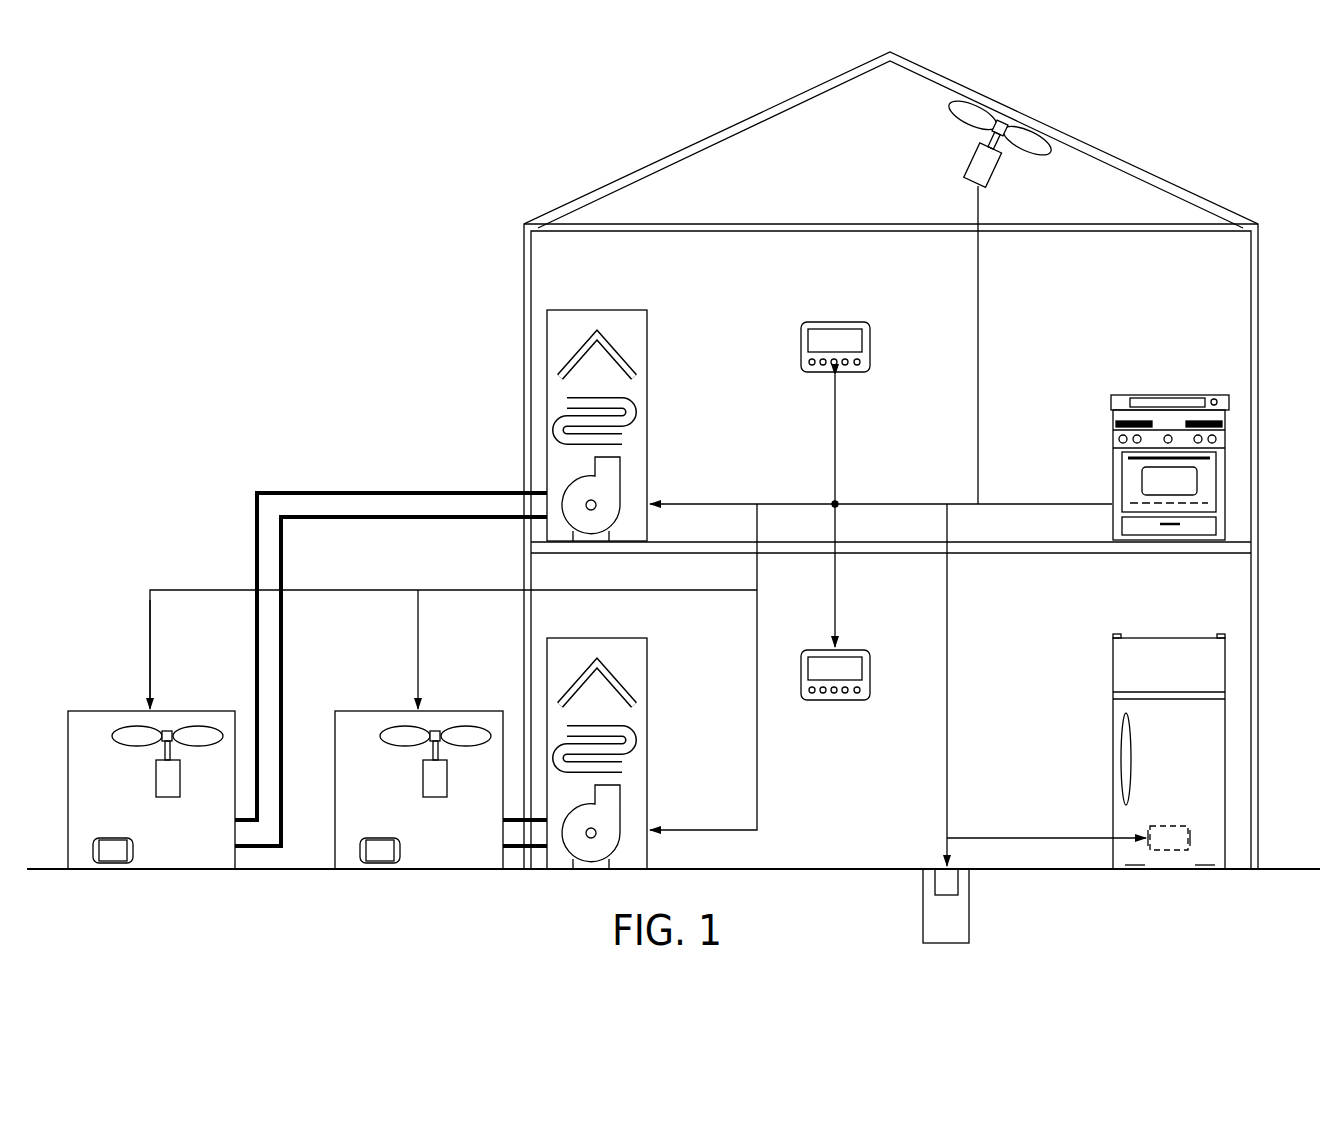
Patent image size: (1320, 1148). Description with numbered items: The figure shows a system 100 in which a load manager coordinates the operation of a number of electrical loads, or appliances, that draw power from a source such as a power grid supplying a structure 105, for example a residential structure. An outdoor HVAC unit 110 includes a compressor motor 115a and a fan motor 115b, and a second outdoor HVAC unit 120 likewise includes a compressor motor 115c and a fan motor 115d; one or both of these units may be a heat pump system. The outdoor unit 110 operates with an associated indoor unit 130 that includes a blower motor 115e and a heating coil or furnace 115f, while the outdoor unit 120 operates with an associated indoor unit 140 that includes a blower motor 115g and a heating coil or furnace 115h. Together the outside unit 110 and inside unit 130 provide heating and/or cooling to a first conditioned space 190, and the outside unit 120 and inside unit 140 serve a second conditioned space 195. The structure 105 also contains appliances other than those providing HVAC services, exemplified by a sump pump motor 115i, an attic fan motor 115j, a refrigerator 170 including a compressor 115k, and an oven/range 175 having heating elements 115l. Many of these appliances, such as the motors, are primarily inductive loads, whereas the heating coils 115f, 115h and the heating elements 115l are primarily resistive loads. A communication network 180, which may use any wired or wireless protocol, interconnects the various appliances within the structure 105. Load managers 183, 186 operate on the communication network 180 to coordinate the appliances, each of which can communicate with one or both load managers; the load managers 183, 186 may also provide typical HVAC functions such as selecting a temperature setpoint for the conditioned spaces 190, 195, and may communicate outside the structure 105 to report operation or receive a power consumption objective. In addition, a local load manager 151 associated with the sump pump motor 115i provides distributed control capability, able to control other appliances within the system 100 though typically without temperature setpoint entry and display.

The system 100 is at (357, 285).
The structure 105 is at (1103, 150).
The outdoor HVAC unit 110 is at (151, 755).
The compressor motor 115a is at (113, 838).
The fan motor 115b is at (167, 798).
The compressor motor 115c is at (380, 838).
The fan motor 115d is at (435, 798).
The blower motor 115e is at (617, 490).
The heating coil or furnace 115f is at (637, 417).
The blower motor 115g is at (617, 820).
The heating coil or furnace 115h is at (637, 745).
The sump pump motor 115i is at (969, 905).
The attic fan motor 115j is at (974, 162).
The compressor 115k is at (1178, 826).
The heating elements 115l is at (1122, 424).
The outdoor HVAC unit 120 is at (419, 755).
The indoor unit 130 is at (639, 425).
The indoor unit 140 is at (641, 753).
The local load manager 151 is at (950, 906).
The refrigerator 170 is at (1132, 751).
The oven/range 175 is at (1135, 432).
The communication network 180 is at (947, 600).
The load manager 183 is at (845, 321).
The load manager 186 is at (845, 701).
The first conditioned space 190 is at (1079, 335).
The second conditioned space 195 is at (1047, 695).